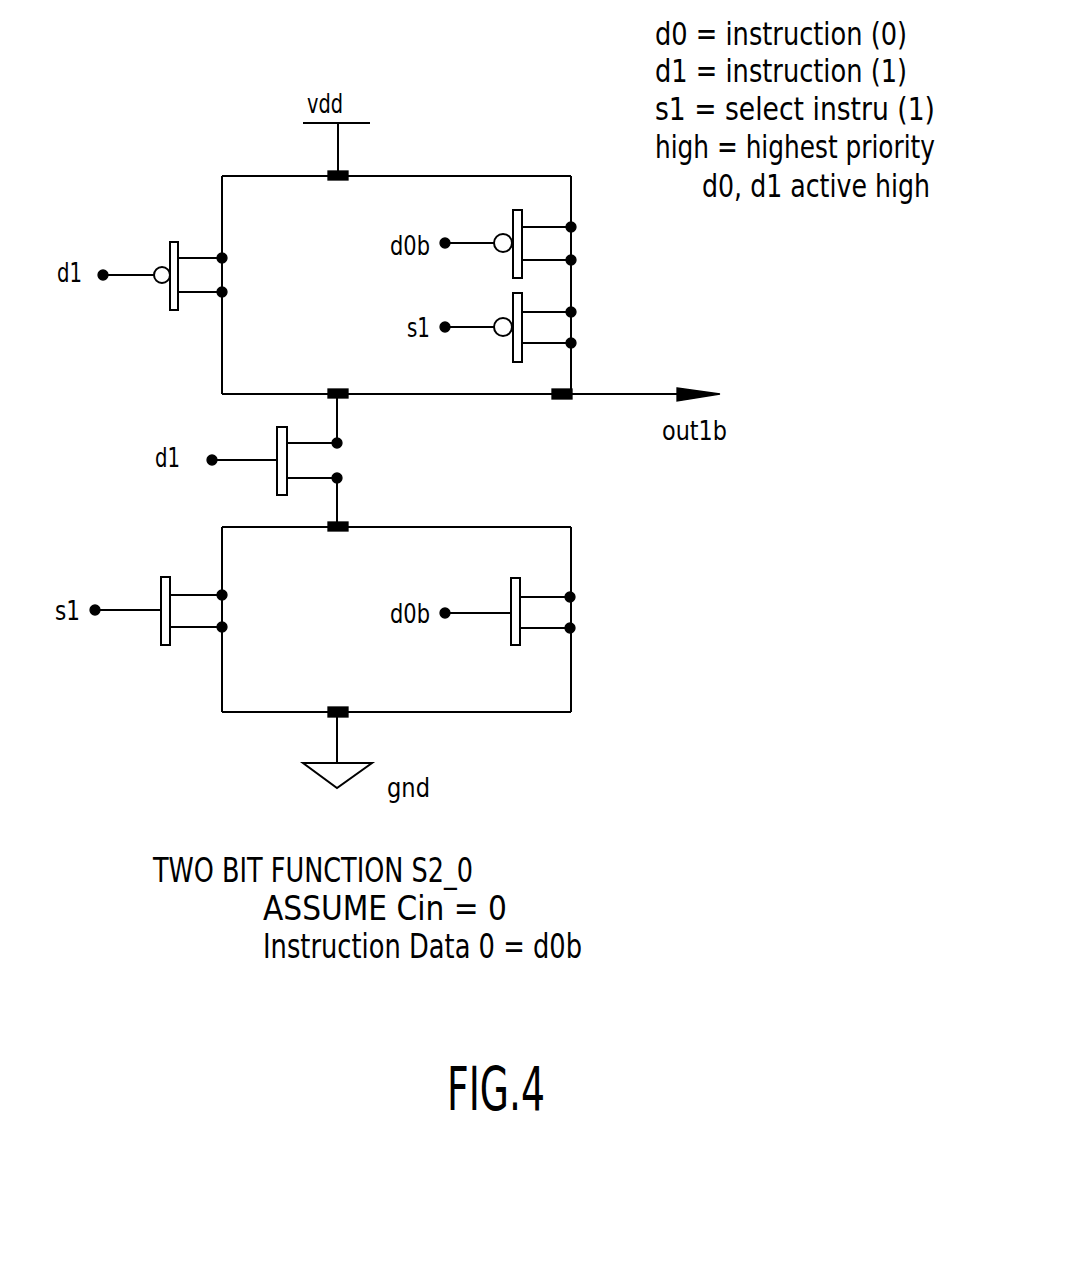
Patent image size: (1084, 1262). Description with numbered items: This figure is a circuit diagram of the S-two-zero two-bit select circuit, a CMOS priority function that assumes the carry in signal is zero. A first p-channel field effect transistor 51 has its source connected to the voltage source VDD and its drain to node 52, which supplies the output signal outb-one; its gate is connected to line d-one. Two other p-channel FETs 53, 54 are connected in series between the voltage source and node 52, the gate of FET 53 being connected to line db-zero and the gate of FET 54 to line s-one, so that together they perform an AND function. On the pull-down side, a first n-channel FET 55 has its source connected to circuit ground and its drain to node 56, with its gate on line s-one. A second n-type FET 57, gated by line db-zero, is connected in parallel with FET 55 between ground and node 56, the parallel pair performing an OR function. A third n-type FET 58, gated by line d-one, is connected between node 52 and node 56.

The first p-channel field effect transistor 51 is at (172, 244).
The node 52 is at (335, 389).
The p-channel FET 53 is at (512, 218).
The p-channel FET 54 is at (512, 358).
The first n-channel FET 55 is at (277, 430).
The node 56 is at (348, 530).
The second n-type FET 57 is at (161, 580).
The third n-type FET 58 is at (510, 590).